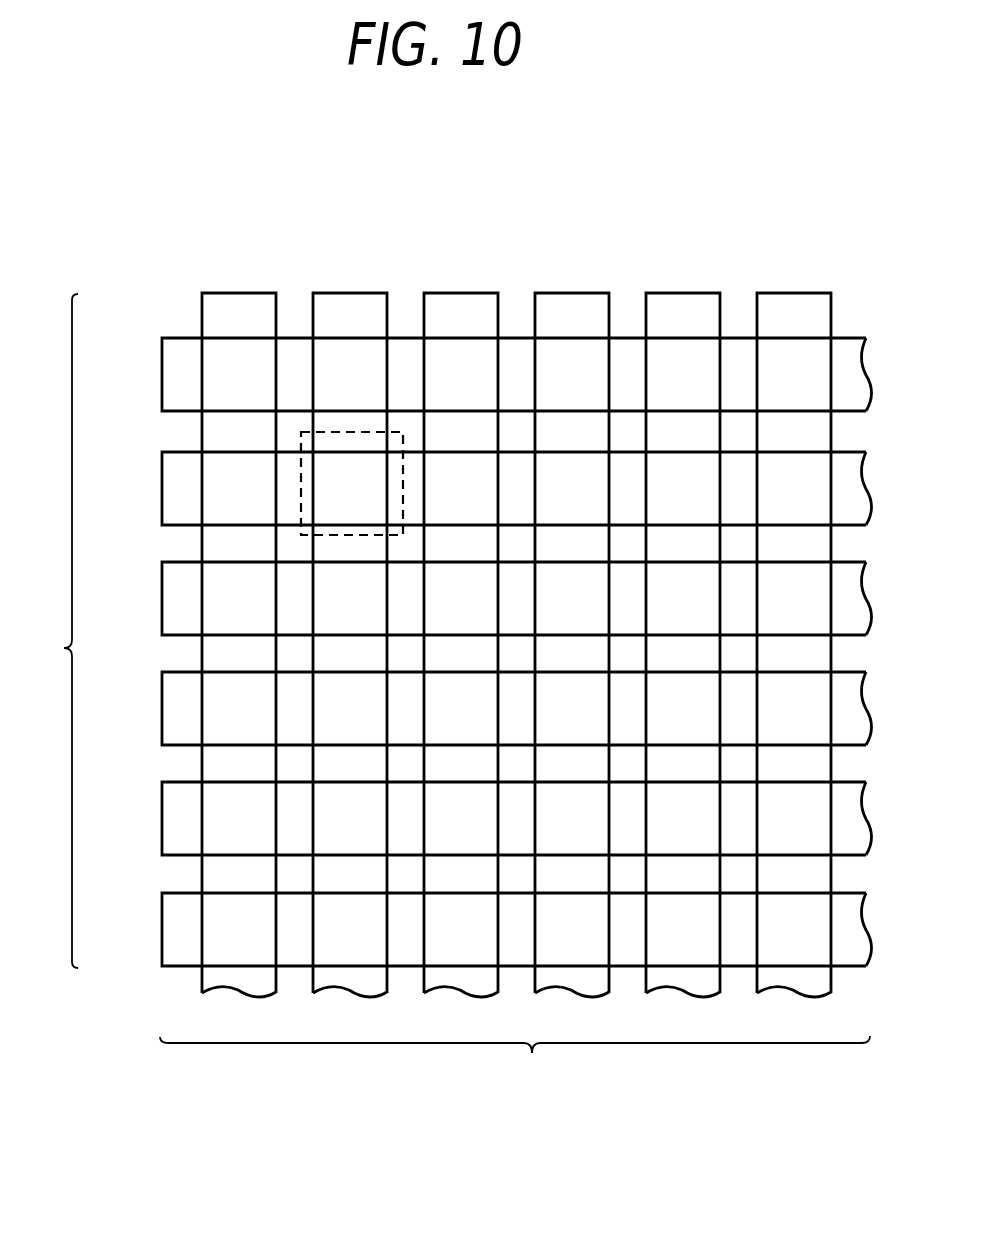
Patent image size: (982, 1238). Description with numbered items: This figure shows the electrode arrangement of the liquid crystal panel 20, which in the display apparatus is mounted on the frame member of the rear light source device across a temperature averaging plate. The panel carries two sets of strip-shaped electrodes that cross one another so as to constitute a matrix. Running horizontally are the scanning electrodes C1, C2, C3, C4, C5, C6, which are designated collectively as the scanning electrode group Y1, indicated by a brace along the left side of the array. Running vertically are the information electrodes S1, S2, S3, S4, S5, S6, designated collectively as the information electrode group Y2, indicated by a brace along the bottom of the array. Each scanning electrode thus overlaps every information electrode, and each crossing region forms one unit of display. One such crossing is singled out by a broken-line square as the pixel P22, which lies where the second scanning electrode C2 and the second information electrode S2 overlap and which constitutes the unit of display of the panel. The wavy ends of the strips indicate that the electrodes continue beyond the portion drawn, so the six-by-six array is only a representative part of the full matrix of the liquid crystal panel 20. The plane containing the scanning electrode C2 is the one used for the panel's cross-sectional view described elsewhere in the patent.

The liquid crystal panel 20 is at (667, 220).
The information electrode S1 is at (243, 300).
The information electrode S2 is at (354, 300).
The information electrode S3 is at (465, 300).
The information electrode S4 is at (576, 300).
The information electrode S5 is at (687, 300).
The information electrode S6 is at (798, 300).
The scanning electrode C1 is at (162, 382).
The scanning electrode C2 is at (162, 496).
The scanning electrode C3 is at (162, 606).
The scanning electrode C4 is at (162, 716).
The scanning electrode C5 is at (162, 826).
The scanning electrode C6 is at (162, 937).
The pixel P22 is at (353, 432).
The scanning electrodes group Y1 is at (47, 631).
The information electrodes group Y2 is at (515, 1065).